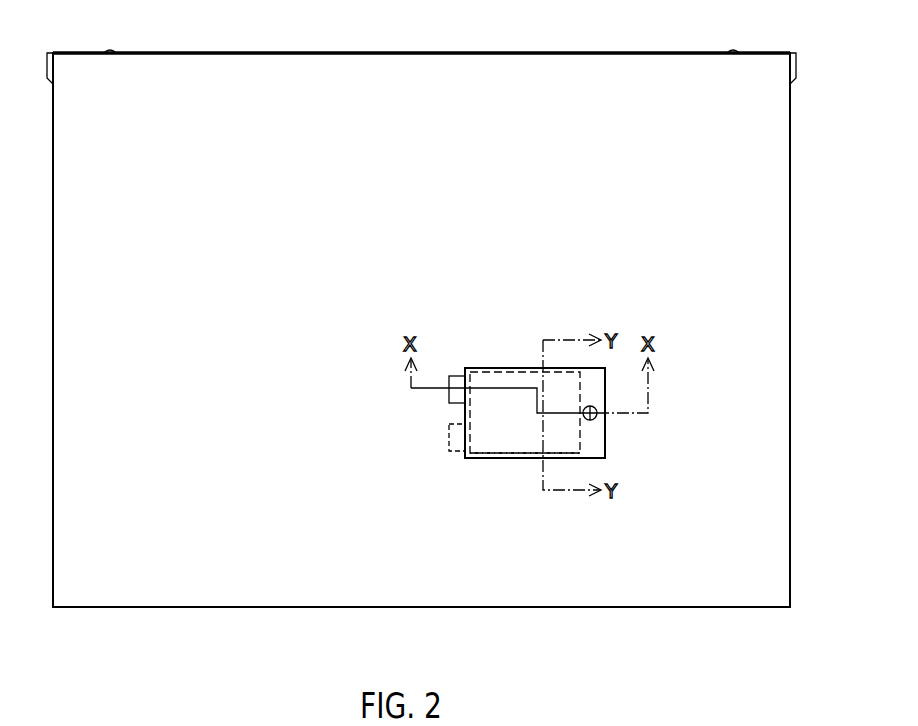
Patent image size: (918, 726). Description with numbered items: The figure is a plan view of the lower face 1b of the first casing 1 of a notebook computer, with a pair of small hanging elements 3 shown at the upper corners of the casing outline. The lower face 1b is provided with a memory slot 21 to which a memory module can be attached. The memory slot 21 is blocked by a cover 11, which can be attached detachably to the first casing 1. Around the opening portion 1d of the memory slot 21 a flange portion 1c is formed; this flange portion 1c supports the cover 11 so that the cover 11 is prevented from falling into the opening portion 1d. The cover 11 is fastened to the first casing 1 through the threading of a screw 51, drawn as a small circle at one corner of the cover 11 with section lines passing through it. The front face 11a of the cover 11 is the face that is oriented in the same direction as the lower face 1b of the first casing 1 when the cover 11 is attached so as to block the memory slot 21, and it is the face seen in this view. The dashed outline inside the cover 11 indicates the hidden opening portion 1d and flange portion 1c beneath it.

The first casing 1 is at (760, 284).
The lower face 1b is at (734, 237).
The flange portion 1c is at (593, 446).
The opening portion 1d is at (491, 381).
The hanging tab 3 is at (48, 68).
The cover 11 is at (500, 413).
The front face 11a is at (536, 421).
The memory slot 21 is at (488, 440).
The screw 51 is at (597, 408).